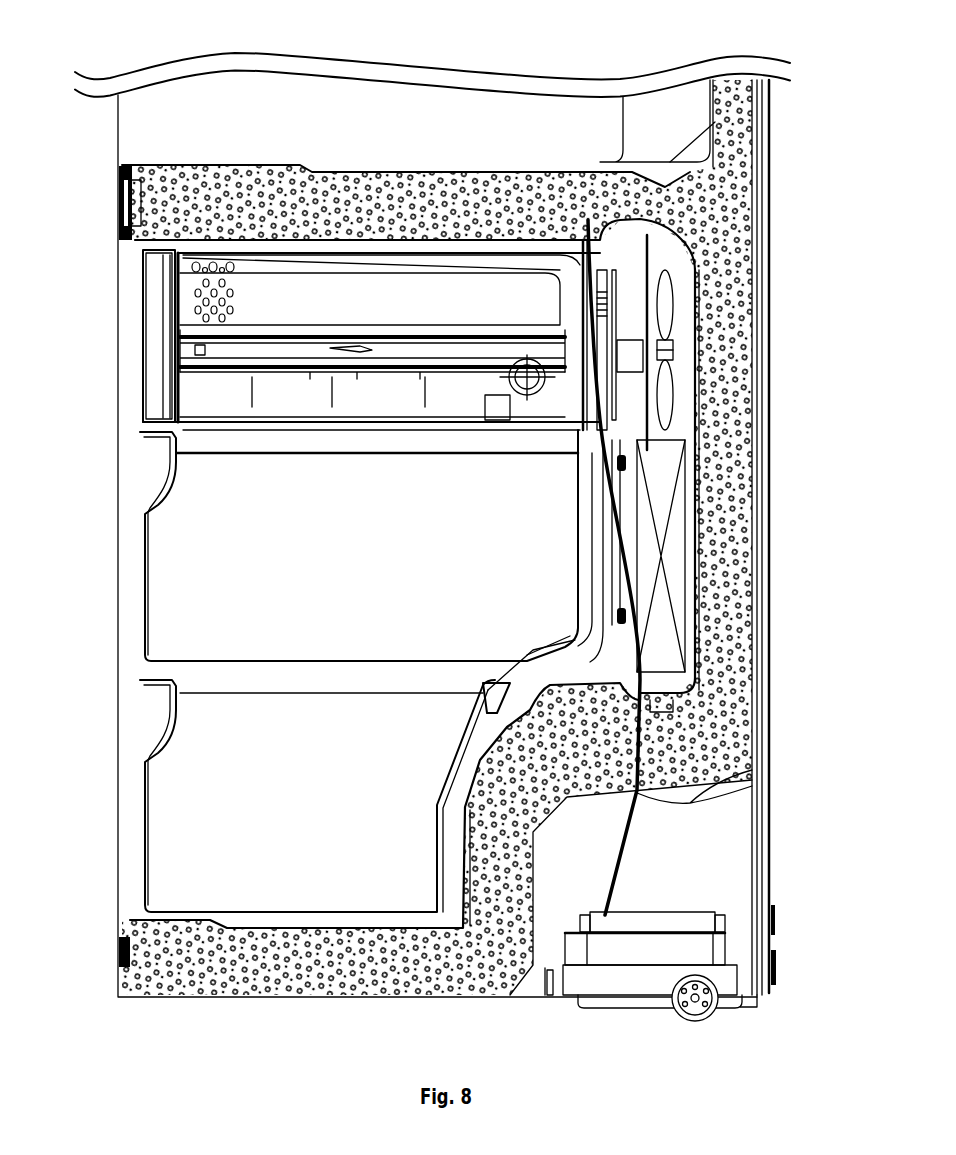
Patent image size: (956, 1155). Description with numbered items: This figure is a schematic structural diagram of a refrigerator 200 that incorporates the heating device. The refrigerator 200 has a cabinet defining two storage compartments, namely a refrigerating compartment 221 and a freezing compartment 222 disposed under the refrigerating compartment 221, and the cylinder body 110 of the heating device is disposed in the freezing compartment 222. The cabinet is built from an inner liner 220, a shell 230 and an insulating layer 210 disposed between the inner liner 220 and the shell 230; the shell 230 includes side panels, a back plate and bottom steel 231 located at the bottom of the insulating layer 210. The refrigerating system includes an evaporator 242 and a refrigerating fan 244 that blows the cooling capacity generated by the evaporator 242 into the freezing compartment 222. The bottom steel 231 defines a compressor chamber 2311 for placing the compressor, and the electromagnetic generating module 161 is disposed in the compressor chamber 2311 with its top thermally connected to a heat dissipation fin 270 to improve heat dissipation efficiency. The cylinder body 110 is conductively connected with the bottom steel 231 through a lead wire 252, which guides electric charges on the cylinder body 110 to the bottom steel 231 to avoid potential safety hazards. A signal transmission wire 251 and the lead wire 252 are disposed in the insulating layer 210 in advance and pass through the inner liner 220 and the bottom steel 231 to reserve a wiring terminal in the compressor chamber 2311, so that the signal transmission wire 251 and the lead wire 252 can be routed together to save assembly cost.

The refrigerator 200 is at (83, 37).
The refrigerating compartment 221 is at (462, 118).
The inner liner 220 is at (707, 247).
The refrigerating fan 244 is at (673, 345).
The insulating layer 210 is at (733, 413).
The evaporator 242 is at (673, 528).
The shell 230 is at (762, 567).
The lead wire 252 is at (690, 803).
The compressor chamber 2311 is at (722, 840).
The heat dissipation fin 270 is at (686, 920).
The electromagnetic generating module 161 is at (635, 950).
The signal transmission wire 251 is at (613, 850).
The bottom steel 231 is at (528, 870).
The cylinder body 110 is at (225, 397).
The freezing compartment 222 is at (173, 773).